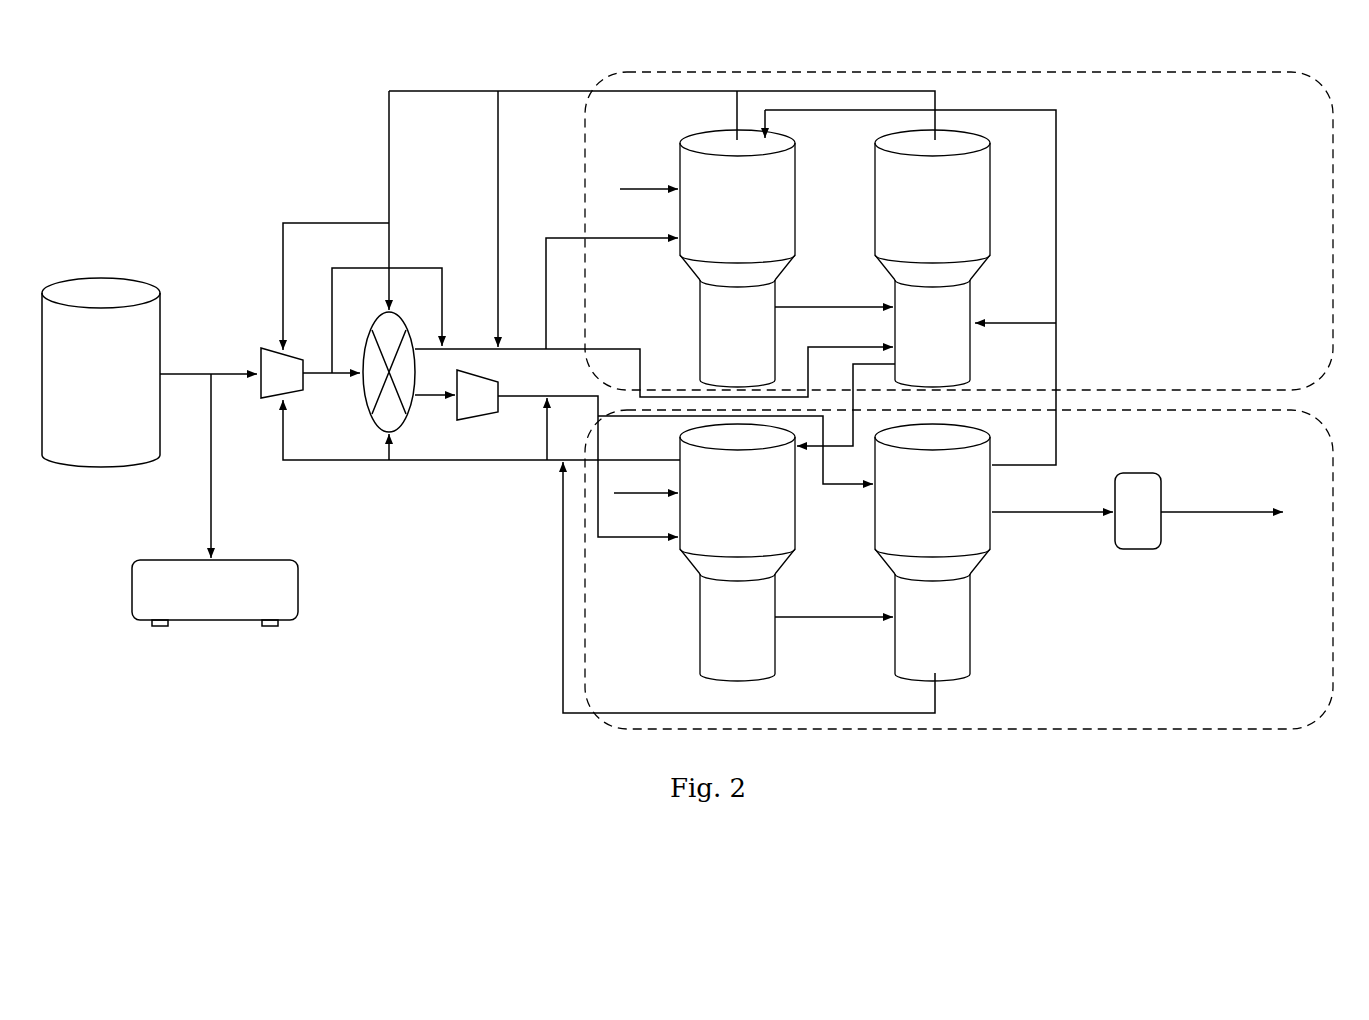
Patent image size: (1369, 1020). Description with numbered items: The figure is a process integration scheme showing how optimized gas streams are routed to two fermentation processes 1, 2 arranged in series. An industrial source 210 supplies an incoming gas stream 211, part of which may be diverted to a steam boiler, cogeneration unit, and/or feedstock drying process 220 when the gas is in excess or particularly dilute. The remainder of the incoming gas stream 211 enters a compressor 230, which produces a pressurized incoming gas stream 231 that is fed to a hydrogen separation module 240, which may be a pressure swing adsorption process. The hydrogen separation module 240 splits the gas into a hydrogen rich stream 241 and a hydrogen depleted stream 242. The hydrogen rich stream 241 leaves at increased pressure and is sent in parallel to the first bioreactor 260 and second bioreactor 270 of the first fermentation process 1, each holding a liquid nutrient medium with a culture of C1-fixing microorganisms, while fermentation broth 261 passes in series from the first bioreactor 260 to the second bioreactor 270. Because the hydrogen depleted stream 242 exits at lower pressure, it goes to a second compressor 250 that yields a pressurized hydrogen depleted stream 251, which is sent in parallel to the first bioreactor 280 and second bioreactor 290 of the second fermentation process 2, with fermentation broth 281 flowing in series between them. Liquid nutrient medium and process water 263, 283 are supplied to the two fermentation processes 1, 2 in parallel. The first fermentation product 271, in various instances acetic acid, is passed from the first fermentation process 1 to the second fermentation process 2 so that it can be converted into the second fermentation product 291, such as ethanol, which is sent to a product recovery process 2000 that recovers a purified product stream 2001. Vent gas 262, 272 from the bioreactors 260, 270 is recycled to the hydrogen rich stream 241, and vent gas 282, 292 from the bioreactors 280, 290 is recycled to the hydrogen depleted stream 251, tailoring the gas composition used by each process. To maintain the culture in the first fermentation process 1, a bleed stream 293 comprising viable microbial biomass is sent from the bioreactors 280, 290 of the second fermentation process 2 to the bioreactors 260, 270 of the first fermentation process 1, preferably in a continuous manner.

The first fermentation process 1 is at (971, 231).
The second fermentation process 2 is at (971, 569).
The industrial source 210 is at (101, 372).
The incoming gas stream 211 is at (208, 456).
The feedstock drying process 220 is at (215, 593).
The compressor 230 is at (325, 244).
The pressurized incoming gas stream 231 is at (372, 334).
The hydrogen separation module 240 is at (389, 372).
The hydrogen rich stream 241 is at (662, 244).
The hydrogen depleted stream 242 is at (435, 386).
The compressor 250 is at (477, 395).
The pressurized hydrogen depleted stream 251 is at (685, 457).
The first bioreactor 260 is at (737, 258).
The fermentation broth 261 is at (834, 297).
The vent gas 262 is at (712, 115).
The liquid nutrient medium and process water 263 is at (649, 180).
The second bioreactor 270 is at (932, 258).
The first fermentation product 271 is at (846, 405).
The vent gas 272 is at (910, 268).
The first bioreactor 280 is at (737, 552).
The fermentation broth 281 is at (834, 605).
The vent gas 282 is at (481, 431).
The liquid nutrient medium and process water 283 is at (646, 482).
The second bioreactor 290 is at (932, 552).
The second fermentation product 291 is at (1052, 502).
The vent gas 292 is at (749, 587).
The bleed stream 293 is at (1034, 349).
The product recovery process 2000 is at (1138, 511).
The purified product stream 2001 is at (1222, 501).